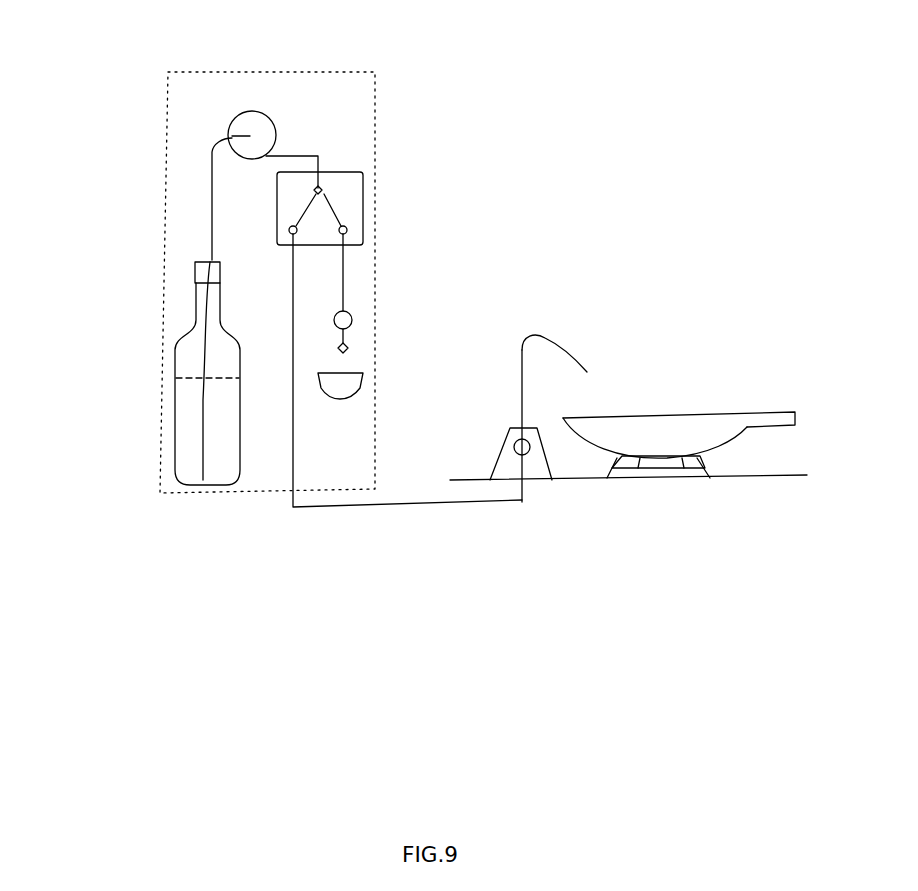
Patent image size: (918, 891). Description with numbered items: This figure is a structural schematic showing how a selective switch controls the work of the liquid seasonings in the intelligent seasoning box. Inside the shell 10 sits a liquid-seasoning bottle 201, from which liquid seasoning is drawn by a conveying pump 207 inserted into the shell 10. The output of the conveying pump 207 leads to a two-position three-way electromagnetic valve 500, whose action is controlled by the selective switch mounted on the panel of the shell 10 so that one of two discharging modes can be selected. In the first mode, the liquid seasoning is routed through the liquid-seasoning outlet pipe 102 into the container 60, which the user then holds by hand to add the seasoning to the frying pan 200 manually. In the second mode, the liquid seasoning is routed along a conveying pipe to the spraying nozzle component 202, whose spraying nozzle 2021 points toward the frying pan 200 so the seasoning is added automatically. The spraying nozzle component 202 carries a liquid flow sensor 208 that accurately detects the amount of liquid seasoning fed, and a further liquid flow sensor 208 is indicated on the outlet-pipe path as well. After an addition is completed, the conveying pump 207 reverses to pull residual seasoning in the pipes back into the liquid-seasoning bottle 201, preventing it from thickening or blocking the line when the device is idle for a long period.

The shell 10 is at (185, 115).
The conveying pump 207 is at (258, 127).
The two-position three-way electromagnetic valve 500 is at (347, 207).
The liquid flow sensor 208 is at (350, 308).
The liquid-seasoning outlet pipe 102 is at (349, 345).
The container 60 is at (347, 384).
The liquid-seasoning bottle 201 is at (188, 365).
The spraying nozzle 2021 is at (567, 343).
The frying pan 200 is at (668, 430).
The spraying nozzle component 202 is at (538, 481).